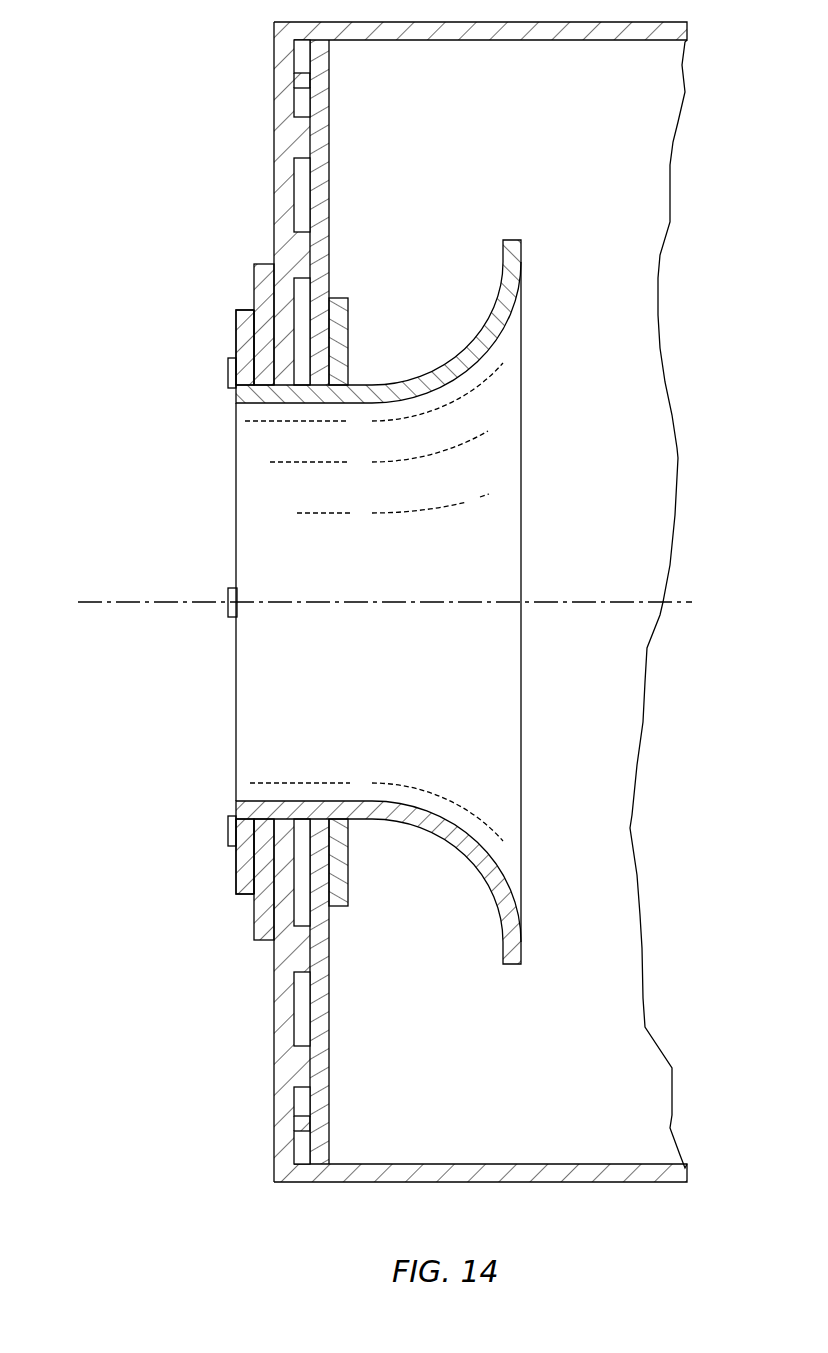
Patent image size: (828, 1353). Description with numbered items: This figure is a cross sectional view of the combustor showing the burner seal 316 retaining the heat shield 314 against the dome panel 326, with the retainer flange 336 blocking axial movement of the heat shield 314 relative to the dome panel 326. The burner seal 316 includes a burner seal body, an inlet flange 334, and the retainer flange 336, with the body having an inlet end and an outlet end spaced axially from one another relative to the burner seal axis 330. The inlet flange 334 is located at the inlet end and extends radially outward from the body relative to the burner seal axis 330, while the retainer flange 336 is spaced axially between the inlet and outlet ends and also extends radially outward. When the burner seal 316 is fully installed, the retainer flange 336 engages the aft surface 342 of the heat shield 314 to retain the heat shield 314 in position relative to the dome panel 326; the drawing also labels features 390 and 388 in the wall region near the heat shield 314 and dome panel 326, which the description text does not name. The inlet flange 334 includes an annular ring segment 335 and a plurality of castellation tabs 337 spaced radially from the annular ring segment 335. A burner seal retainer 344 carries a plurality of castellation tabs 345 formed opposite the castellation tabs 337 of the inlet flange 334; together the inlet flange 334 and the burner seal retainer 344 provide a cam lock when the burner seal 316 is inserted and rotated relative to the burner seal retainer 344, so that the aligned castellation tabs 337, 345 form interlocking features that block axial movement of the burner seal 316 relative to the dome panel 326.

The heat shield 314 is at (352, 130).
The dome panel 326 is at (293, 150).
The wall rib 390 is at (298, 85).
The liner 388 is at (322, 180).
The aft surface 342 is at (330, 230).
The retainer flange 336 is at (342, 325).
The burner seal retainer 344 is at (243, 268).
The inlet flange 334 is at (210, 302).
The castellation tabs 337 is at (240, 318).
The castellation tabs 345 is at (258, 350).
The annular ring segment 335 is at (236, 383).
The burner seal 316 is at (209, 500).
The burner seal axis 330 is at (122, 606).